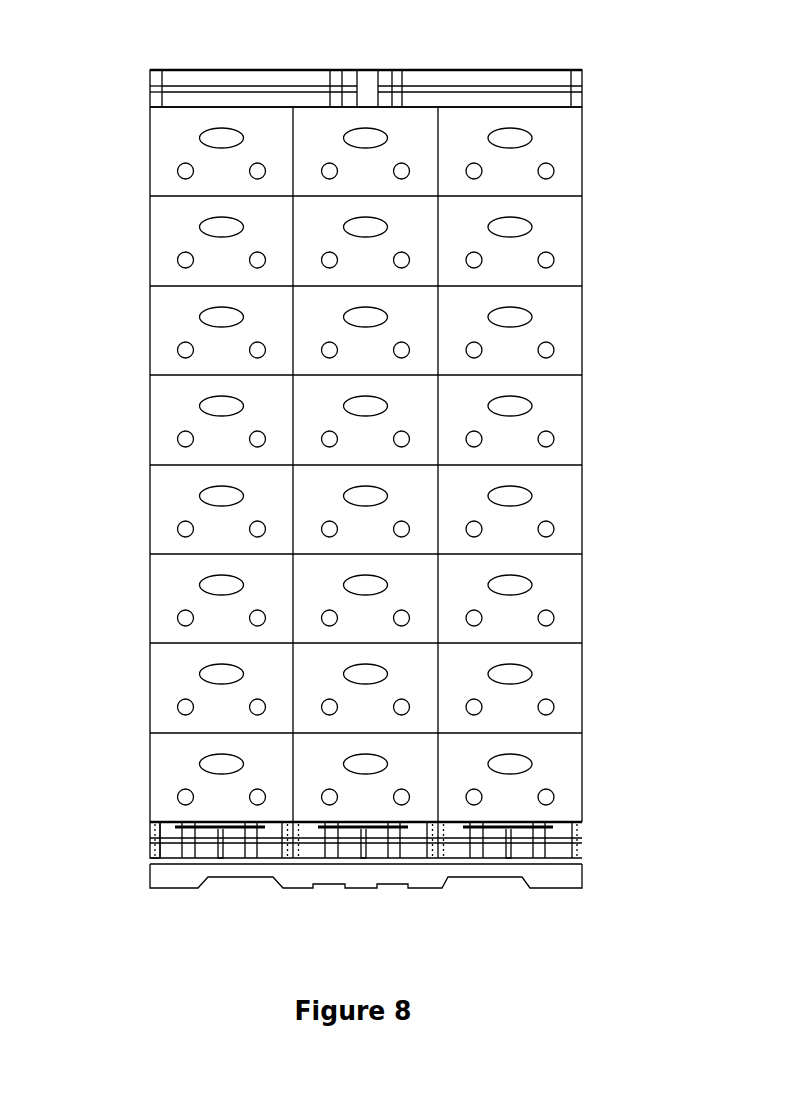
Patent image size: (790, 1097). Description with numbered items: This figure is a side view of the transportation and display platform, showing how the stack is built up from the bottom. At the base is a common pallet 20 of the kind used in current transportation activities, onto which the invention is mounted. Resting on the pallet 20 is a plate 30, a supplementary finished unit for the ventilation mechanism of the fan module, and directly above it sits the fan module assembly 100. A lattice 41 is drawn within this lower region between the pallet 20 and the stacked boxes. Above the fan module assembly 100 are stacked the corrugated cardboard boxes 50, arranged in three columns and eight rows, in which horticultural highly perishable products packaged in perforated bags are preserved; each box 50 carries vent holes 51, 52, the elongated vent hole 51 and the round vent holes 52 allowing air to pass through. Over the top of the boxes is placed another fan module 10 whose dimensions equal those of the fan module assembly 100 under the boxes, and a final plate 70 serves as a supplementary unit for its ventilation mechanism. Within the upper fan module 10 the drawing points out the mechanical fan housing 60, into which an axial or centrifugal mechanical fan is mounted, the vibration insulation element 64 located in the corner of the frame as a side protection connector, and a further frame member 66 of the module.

The fan module 10 is at (586, 89).
The common pallet 20 is at (417, 857).
The plate 30 is at (417, 830).
The lower support lattice 41 is at (415, 811).
The box 50 is at (417, 464).
The vent hole 51 is at (442, 451).
The vent hole 52 is at (431, 484).
The mechanical fan housing 60 is at (480, 58).
The vibration insulation element 64 is at (110, 75).
The top rail inner wall 66 is at (245, 70).
The final plate 70 is at (410, 56).
The fan module assembly 100 is at (149, 842).